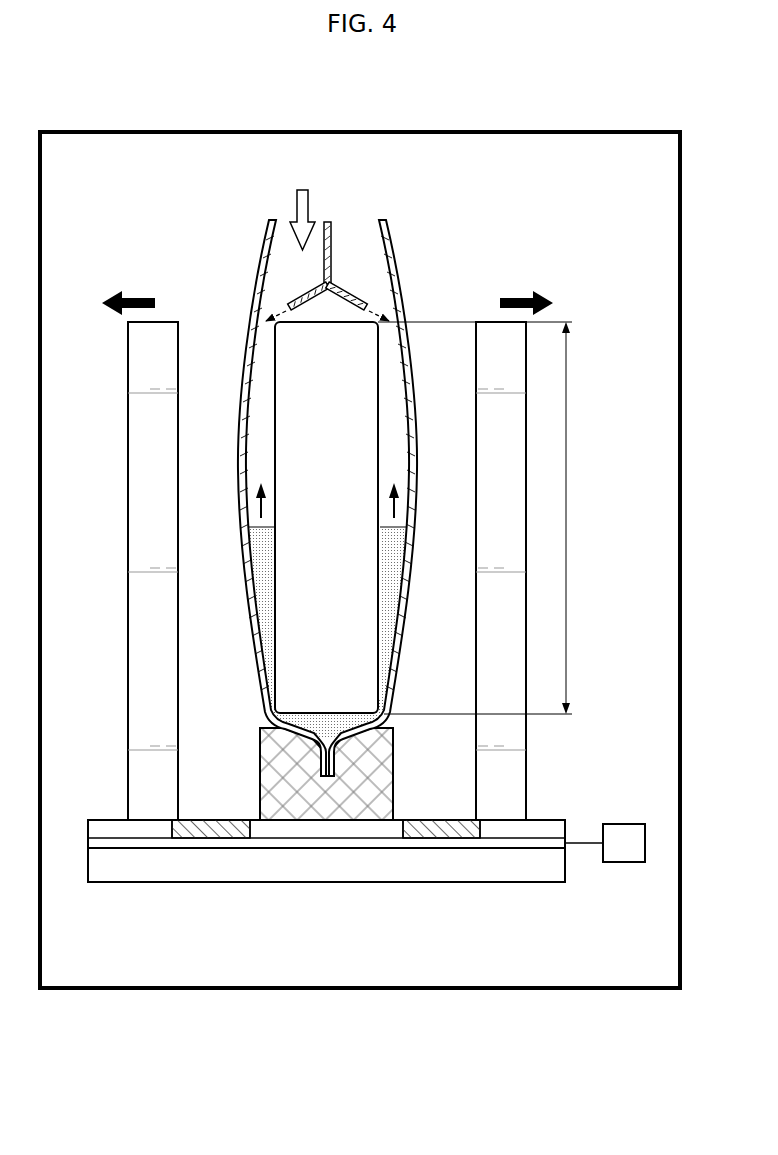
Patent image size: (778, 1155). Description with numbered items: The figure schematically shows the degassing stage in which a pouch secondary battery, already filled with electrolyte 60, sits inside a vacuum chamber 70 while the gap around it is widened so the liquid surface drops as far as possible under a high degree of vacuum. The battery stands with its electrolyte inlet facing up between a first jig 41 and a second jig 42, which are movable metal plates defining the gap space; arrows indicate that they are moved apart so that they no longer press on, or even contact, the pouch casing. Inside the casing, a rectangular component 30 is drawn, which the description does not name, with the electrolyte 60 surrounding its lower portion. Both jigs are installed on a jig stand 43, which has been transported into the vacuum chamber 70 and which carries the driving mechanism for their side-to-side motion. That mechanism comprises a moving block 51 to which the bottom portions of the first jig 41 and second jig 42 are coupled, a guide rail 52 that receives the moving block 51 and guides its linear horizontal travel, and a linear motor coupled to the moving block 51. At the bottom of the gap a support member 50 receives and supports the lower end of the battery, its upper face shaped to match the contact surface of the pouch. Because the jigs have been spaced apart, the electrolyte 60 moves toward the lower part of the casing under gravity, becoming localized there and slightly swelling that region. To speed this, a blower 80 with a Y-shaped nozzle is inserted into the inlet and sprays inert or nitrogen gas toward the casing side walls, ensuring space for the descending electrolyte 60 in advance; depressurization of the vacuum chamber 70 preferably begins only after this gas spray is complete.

The ingot / silicon rod 30 is at (341, 517).
The first jig 41 is at (140, 771).
The second jig 42 is at (513, 771).
The jig stand 43 is at (162, 902).
The support member 50 is at (352, 802).
The moving block 51 is at (232, 834).
The guide rail 52 is at (510, 850).
The electrolyte 60 is at (398, 583).
The vacuum chamber 70 is at (591, 130).
The blower 80 is at (331, 238).